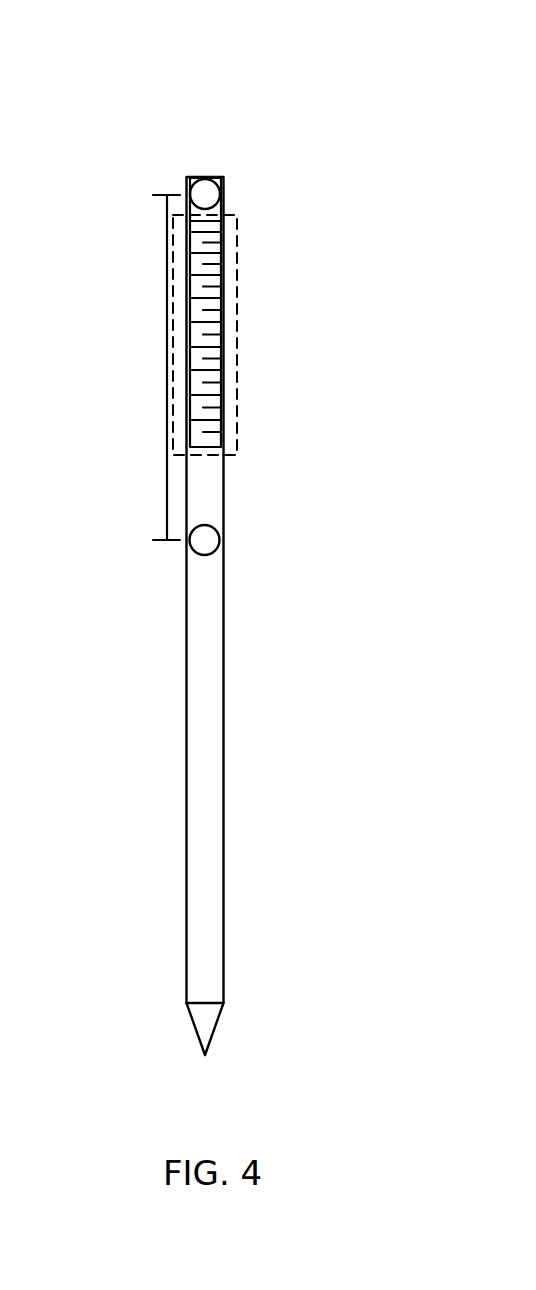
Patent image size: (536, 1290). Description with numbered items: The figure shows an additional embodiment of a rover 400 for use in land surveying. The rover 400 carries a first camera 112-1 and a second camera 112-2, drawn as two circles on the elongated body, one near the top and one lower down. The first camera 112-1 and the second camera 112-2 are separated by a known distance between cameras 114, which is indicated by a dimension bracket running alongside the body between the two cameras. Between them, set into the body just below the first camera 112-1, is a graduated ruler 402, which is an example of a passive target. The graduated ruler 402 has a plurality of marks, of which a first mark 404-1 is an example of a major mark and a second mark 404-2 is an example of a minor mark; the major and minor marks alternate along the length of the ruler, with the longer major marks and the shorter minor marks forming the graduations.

The rover 400 is at (203, 131).
The first camera 112-1 is at (222, 181).
The second camera 112-2 is at (218, 529).
The graduated ruler 402 is at (233, 213).
The first mark 404-1 is at (222, 276).
The second mark 404-2 is at (222, 310).
The distance between cameras 114 is at (167, 312).